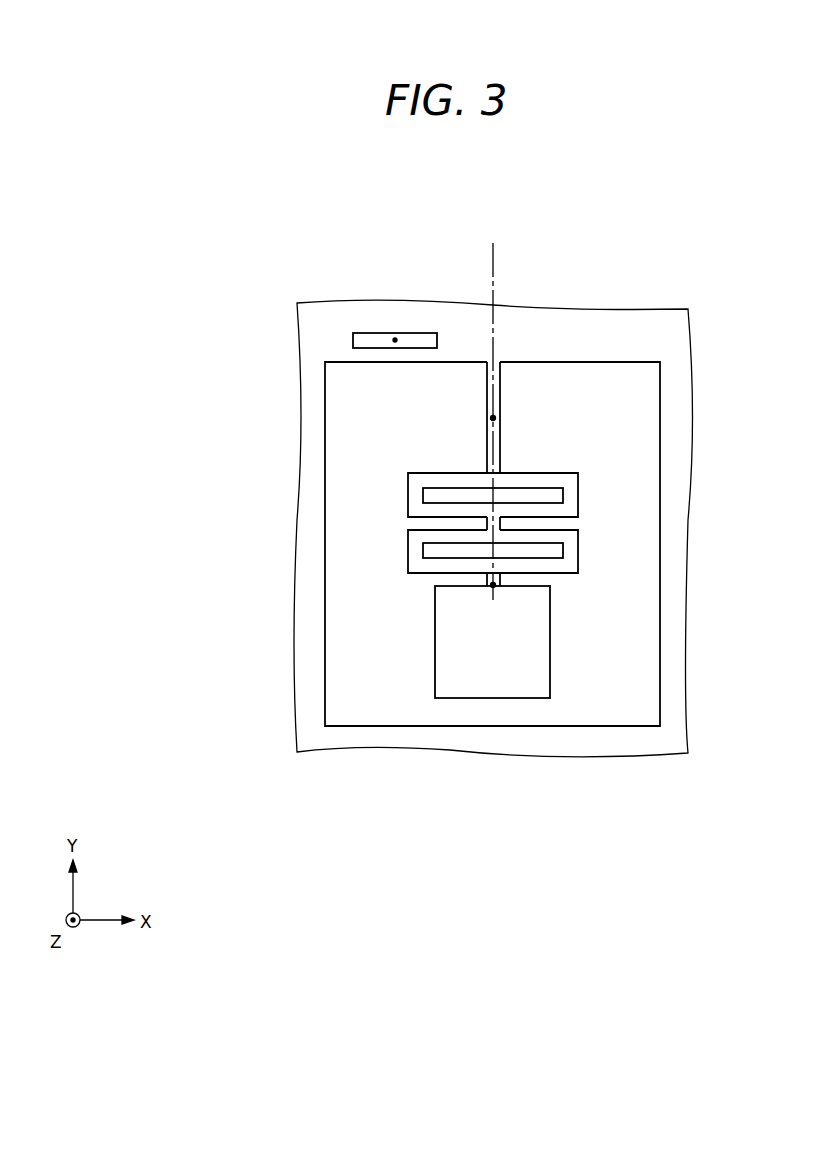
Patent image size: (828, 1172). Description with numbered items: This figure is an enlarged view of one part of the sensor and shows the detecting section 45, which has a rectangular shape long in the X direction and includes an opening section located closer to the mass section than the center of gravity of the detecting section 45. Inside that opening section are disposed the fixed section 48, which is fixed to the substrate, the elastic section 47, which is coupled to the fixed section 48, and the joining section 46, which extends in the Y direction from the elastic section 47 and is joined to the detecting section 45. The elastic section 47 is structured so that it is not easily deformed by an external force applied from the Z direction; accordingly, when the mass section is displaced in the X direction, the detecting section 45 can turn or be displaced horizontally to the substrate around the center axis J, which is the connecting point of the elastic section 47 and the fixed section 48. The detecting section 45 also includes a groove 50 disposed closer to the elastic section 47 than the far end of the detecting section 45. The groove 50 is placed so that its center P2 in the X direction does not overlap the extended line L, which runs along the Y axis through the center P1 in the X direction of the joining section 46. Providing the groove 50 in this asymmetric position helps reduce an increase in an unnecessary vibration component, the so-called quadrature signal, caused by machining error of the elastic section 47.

The detecting section 45 is at (645, 333).
The groove 50 is at (368, 333).
The center of the groove P2 is at (398, 333).
The extended line L is at (493, 262).
The joining section 46 is at (500, 382).
The center of the joining section P1 is at (496, 418).
The elastic section 47 is at (578, 493).
The center axis J is at (495, 587).
The fixed section 48 is at (550, 660).